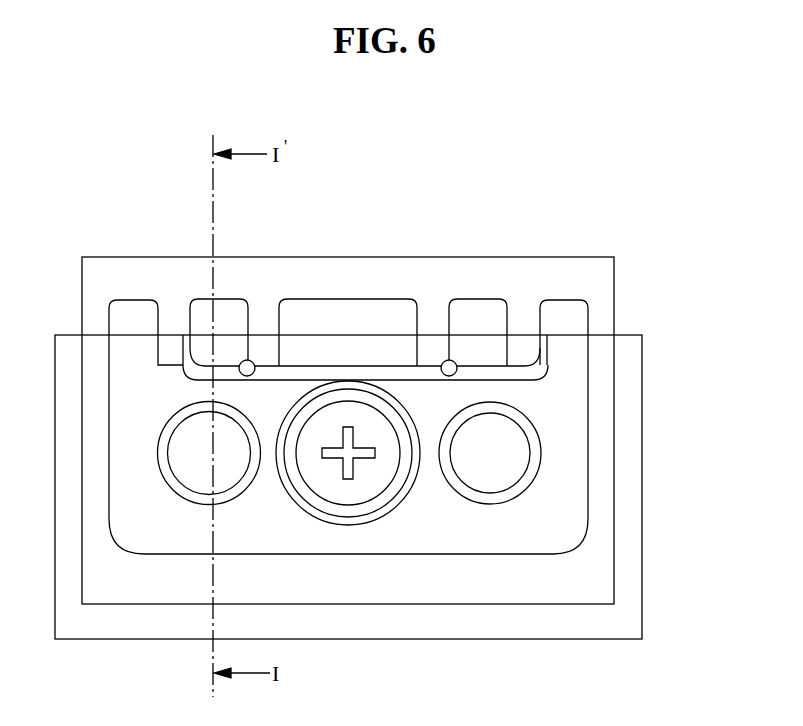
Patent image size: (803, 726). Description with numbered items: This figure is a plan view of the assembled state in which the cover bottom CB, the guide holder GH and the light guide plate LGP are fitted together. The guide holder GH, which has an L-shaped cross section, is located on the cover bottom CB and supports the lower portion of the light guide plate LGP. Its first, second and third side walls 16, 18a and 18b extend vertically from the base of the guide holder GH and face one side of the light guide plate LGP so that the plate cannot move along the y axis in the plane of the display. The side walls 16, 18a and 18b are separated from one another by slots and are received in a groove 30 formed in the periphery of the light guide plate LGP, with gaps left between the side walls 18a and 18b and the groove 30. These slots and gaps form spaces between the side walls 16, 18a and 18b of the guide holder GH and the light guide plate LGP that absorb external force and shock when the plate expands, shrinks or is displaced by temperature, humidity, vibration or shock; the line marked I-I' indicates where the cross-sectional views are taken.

The first side wall 16 is at (357, 312).
The second side wall 18a is at (233, 312).
The third side wall 18b is at (478, 312).
The groove 30 is at (545, 377).
The cover bottom CB is at (602, 274).
The guide holder GH is at (590, 312).
The light guide plate LGP is at (628, 426).